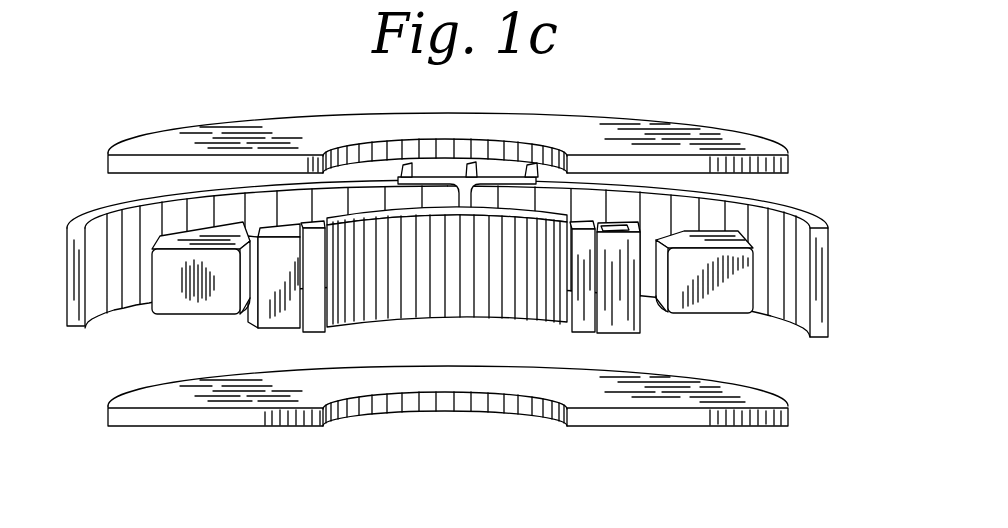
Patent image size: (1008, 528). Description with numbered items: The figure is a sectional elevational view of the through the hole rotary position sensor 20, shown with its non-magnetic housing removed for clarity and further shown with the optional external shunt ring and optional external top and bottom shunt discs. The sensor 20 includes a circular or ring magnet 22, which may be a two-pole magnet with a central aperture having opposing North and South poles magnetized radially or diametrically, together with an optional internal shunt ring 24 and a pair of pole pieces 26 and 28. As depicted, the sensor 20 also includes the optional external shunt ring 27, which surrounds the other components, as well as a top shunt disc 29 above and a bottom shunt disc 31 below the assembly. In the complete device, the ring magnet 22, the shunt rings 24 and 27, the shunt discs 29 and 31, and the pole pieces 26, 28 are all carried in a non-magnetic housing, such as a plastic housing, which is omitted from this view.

The through the hole rotary position sensor 20 is at (706, 80).
The ring magnet 22 is at (641, 334).
The internal shunt ring 24 is at (575, 331).
The pole piece 26 is at (155, 314).
The external shunt ring 27 is at (70, 328).
The pole piece 28 is at (755, 309).
The top shunt disc 29 is at (788, 150).
The bottom shunt disc 31 is at (788, 422).